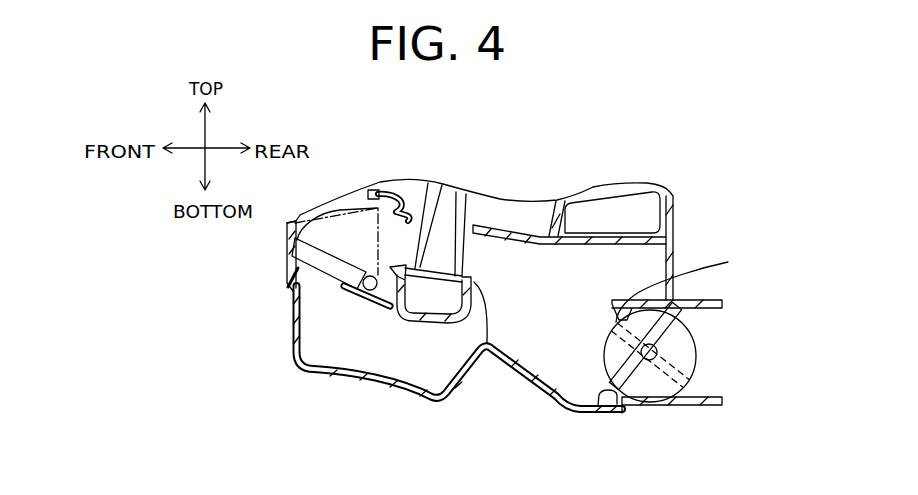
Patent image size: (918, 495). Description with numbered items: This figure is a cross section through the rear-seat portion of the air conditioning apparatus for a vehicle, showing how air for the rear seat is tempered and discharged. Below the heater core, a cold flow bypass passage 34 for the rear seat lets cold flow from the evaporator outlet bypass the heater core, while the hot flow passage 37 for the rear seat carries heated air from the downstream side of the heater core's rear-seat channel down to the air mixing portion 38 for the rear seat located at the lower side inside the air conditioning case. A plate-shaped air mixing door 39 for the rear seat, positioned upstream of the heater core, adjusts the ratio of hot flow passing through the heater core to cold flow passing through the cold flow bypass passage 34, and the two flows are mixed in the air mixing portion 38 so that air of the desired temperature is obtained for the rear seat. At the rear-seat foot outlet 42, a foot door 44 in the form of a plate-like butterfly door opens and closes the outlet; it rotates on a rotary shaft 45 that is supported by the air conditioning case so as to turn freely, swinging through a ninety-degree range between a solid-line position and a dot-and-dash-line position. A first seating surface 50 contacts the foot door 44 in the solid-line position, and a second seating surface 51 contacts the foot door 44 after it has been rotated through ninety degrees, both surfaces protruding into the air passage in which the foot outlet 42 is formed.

The cold flow bypass passage 34 is at (410, 367).
The hot flow passage 37 is at (487, 348).
The air mixing portion 38 is at (545, 350).
The air mixing door 39 is at (325, 268).
The foot outlet 42 is at (692, 374).
The foot door 44 is at (674, 335).
The rotary shaft 45 is at (649, 362).
The first seating surface 50 is at (680, 311).
The second seating surface 51 is at (712, 446).